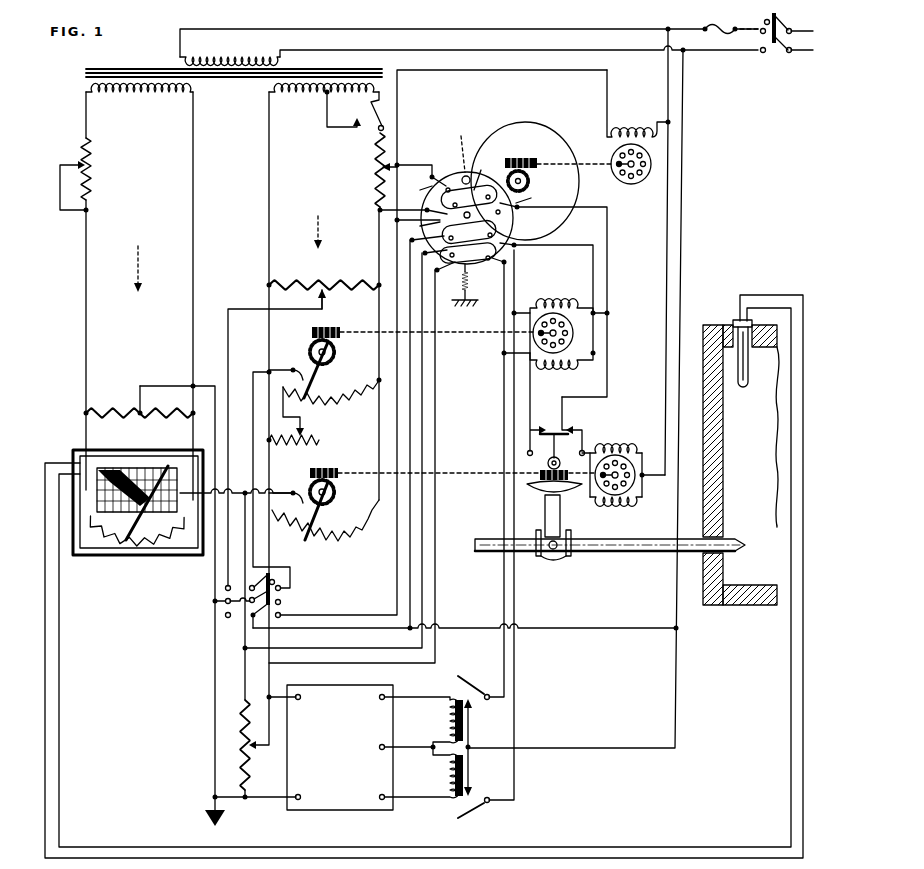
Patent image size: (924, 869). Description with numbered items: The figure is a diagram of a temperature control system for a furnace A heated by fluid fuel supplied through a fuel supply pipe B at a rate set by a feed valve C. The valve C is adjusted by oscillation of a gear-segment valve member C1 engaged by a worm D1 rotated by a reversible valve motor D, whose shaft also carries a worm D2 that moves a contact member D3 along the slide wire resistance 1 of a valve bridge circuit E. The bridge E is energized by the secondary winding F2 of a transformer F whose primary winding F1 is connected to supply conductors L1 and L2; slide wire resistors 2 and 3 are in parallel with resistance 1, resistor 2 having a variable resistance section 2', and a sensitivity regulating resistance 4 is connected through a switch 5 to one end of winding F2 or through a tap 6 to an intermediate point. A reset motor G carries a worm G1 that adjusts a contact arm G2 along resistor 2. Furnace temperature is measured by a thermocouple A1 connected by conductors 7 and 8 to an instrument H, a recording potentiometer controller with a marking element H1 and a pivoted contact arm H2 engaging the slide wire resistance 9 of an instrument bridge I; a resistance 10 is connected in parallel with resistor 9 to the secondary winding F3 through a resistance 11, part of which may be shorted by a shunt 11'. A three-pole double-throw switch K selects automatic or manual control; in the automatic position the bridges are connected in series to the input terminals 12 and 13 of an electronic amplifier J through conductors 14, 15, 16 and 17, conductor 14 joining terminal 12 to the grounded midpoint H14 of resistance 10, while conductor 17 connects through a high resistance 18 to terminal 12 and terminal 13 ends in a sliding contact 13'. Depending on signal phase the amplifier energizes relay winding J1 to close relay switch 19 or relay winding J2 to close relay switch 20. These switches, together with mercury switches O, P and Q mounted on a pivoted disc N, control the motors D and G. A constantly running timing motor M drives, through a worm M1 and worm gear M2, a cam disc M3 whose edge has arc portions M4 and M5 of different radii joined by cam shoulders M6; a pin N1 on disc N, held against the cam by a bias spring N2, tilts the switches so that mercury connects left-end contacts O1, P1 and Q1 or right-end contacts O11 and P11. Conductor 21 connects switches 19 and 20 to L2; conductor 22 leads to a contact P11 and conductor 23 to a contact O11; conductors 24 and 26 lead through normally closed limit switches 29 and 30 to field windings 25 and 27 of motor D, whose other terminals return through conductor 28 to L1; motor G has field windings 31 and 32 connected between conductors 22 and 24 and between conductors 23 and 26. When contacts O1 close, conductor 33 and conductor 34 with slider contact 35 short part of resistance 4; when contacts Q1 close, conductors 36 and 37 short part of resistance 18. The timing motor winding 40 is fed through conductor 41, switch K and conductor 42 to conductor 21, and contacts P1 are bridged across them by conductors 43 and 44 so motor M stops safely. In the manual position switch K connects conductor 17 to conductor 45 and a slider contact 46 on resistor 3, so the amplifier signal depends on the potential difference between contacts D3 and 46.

The slide wire resistance 1 is at (320, 545).
The slide wire resistor 2 is at (331, 407).
The variable resistance section 2' is at (293, 454).
The slide wire resistor 3 is at (318, 282).
The sensitivity regulating resistance 4 is at (375, 178).
The switch 5 is at (370, 124).
The tap 6 is at (324, 133).
The conductor 7 is at (59, 682).
The conductor 8 is at (45, 682).
The slide wire resistance element 9 is at (171, 531).
The resistance 10 is at (156, 418).
The resistance 11 is at (101, 169).
The shunt 11' is at (60, 187).
The input terminal 12 is at (253, 798).
The input terminal 13 is at (287, 683).
The contact 13' is at (265, 737).
The conductor 14 is at (172, 386).
The conductor 15 is at (182, 490).
The conductor 16 is at (253, 391).
The conductor 17 is at (243, 667).
The high resistance 18 is at (242, 735).
The relay switch 19 is at (463, 683).
The relay switch 20 is at (474, 815).
The conductor 21 is at (684, 237).
The conductor 22 is at (502, 608).
The conductor 23 is at (516, 602).
The conductor 24 is at (590, 272).
The field winding 25 is at (603, 511).
The conductor 26 is at (608, 275).
The field winding 27 is at (609, 442).
The conductor 28 is at (666, 237).
The limit switch 29 is at (528, 422).
The limit switch 30 is at (581, 422).
The field winding 31 is at (540, 374).
The field winding 32 is at (542, 302).
The conductor 33 is at (378, 209).
The conductor 34 is at (398, 164).
The slider contact 35 is at (386, 165).
The conductor 36 is at (424, 580).
The conductor 37 is at (437, 598).
The field winding 40 is at (632, 129).
The conductor 41 is at (562, 70).
The conductor 42 is at (590, 628).
The conductor 43 is at (395, 221).
The conductor 44 is at (410, 550).
The conductor 45 is at (227, 332).
The slider contact 46 is at (326, 299).
The furnace A is at (736, 608).
The thermocouple A1 is at (744, 389).
The fuel supply pipe B is at (660, 552).
The feed valve C is at (551, 561).
The valve member C1 is at (545, 522).
The valve motor D is at (596, 468).
The worm D1 is at (554, 463).
The worm D2 is at (329, 468).
The contact member D3 is at (320, 523).
The valve bridge circuit E is at (317, 224).
The transformer F is at (122, 68).
The primary winding F1 is at (222, 56).
The secondary winding F2 is at (305, 94).
The secondary winding F3 is at (144, 94).
The reset motor G is at (533, 333).
The worm G1 is at (310, 330).
The contact arm G2 is at (318, 389).
The instrument H is at (128, 450).
The marking element H1 is at (125, 490).
The contact arm H2 is at (138, 521).
The midpoint H14 is at (138, 409).
The instrument bridge I is at (137, 259).
The electronic amplifier J is at (331, 810).
The relay winding J1 is at (440, 712).
The relay winding J2 is at (440, 765).
The switch K is at (275, 600).
The supply conductor L1 is at (481, 30).
The supply conductor L2 is at (490, 49).
The timing motor M is at (640, 176).
The worm M1 is at (518, 158).
The worm gear M2 is at (530, 180).
The cam disc M3 is at (576, 186).
The arc portion M4 is at (504, 132).
The arc portion M5 is at (549, 128).
The cam shoulder M6 is at (522, 123).
The pivoted disc N is at (449, 174).
The pin N1 is at (459, 157).
The bias spring N2 is at (468, 284).
The mercury switch O is at (484, 172).
The contacts O1 is at (417, 190).
The contacts O11 is at (536, 196).
The mercury switch P is at (462, 218).
The contacts P1 is at (420, 227).
The contacts P11 is at (508, 248).
The mercury switch Q is at (476, 262).
The contacts Q1 is at (456, 268).